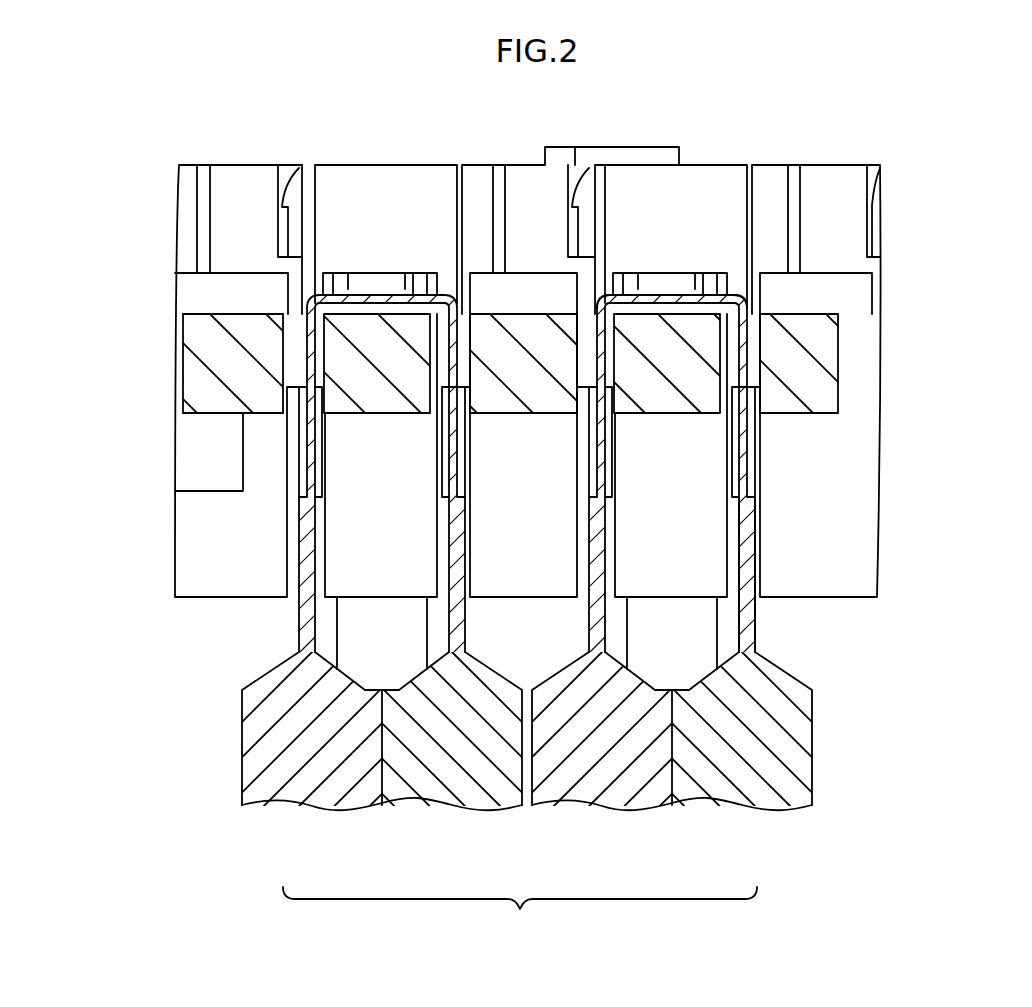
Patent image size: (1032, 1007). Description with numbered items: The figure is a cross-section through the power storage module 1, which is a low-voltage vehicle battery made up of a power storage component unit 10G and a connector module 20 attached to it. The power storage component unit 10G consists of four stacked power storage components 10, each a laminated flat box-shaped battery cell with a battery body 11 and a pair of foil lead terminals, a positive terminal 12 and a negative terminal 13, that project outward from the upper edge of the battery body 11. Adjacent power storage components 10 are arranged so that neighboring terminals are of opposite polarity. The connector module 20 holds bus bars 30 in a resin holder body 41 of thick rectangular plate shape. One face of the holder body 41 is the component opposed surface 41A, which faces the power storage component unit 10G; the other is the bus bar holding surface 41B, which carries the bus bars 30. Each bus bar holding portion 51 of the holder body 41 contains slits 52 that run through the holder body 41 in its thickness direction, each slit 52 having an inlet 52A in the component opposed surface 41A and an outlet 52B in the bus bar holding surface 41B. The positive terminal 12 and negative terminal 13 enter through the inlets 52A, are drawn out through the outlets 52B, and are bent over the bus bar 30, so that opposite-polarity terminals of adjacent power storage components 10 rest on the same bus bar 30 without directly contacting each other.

The power storage module 1 is at (516, 498).
The power storage component 10 is at (305, 829).
The power storage component unit 10G is at (520, 914).
The battery body 11 is at (805, 738).
The positive terminal 12 is at (423, 292).
The negative terminal 13 is at (345, 292).
The connector module 20 is at (930, 397).
The bus bar 30 is at (677, 316).
The holder body 41 is at (215, 355).
The component opposed surface 41A is at (224, 424).
The bus bar holding surface 41B is at (234, 304).
The bus bar holding portion 51 is at (737, 188).
The slit 52 is at (762, 400).
The inlet 52A is at (758, 405).
The outlet 52B is at (750, 292).